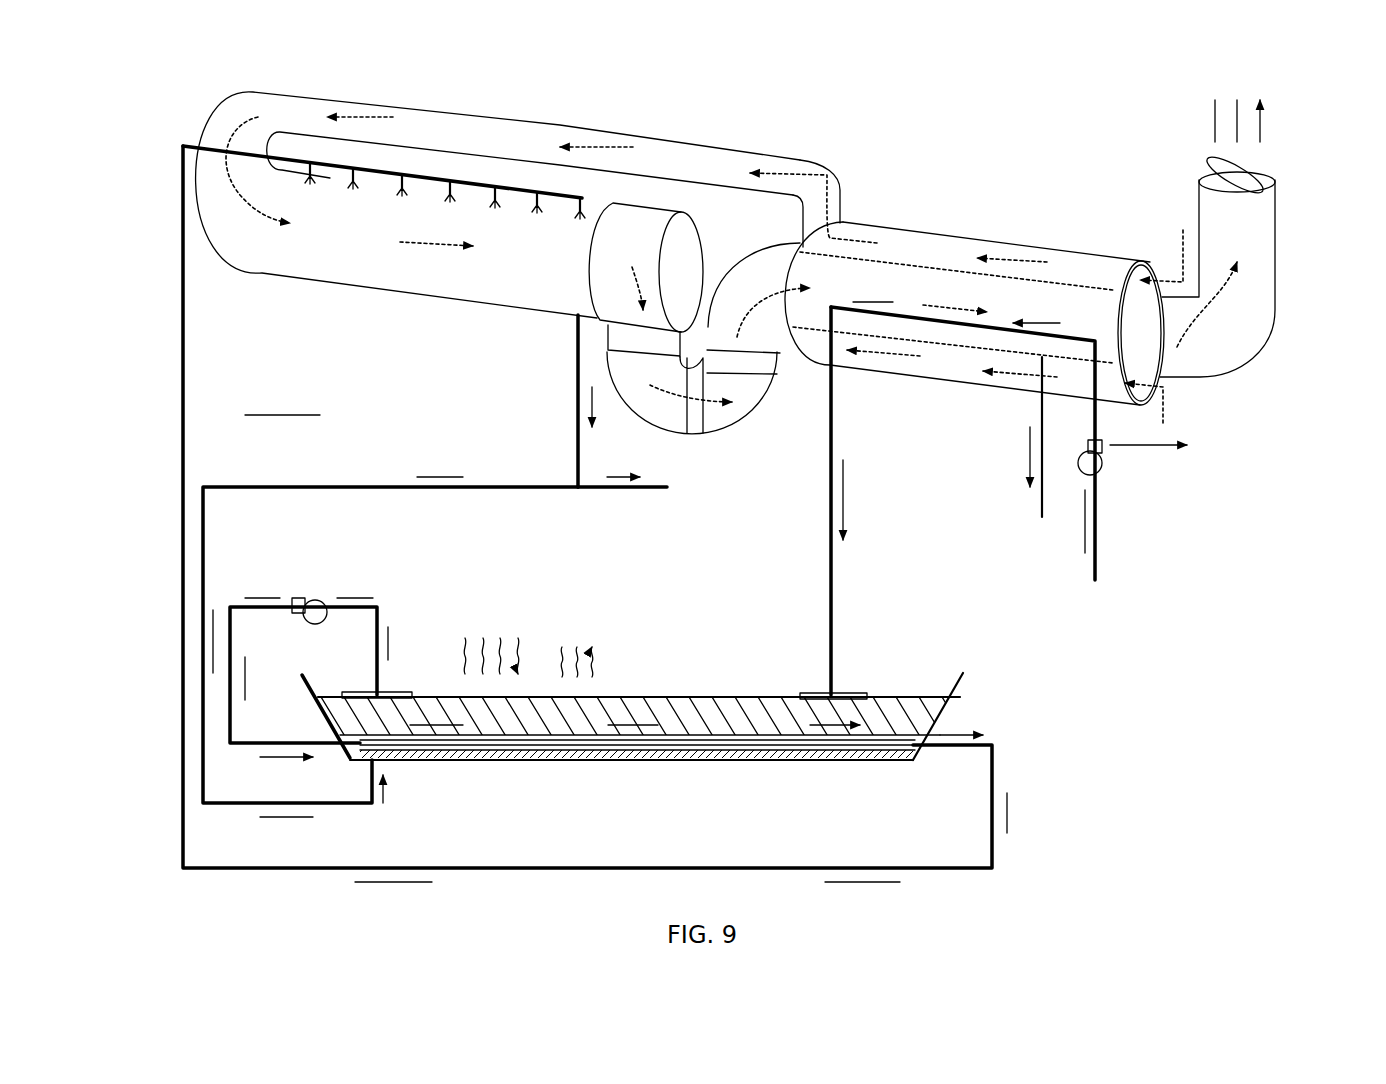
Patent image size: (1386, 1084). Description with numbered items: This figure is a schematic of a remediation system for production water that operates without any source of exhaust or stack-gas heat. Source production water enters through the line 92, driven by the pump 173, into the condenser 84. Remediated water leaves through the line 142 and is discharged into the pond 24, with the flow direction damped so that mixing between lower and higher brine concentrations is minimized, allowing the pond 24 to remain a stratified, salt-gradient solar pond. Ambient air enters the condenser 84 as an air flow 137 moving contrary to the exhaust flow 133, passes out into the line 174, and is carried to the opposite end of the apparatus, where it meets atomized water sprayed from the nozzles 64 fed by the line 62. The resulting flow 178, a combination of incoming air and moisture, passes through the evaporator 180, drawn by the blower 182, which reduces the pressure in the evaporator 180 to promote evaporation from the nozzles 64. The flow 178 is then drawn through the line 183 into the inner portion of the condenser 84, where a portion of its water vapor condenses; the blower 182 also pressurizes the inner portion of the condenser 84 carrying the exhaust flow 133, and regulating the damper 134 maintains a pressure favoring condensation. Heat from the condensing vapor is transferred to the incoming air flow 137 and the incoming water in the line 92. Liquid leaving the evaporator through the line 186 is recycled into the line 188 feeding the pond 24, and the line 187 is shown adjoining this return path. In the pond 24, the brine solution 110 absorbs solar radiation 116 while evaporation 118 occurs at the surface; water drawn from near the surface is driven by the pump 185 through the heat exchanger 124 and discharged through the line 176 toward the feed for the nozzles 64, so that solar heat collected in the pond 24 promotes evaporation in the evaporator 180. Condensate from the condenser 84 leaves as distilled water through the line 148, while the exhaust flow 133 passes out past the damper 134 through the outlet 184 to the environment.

The pond 24 is at (648, 713).
The line 62 is at (428, 175).
The nozzles 64 is at (470, 180).
The condenser 84 is at (1023, 198).
The line 92 is at (1097, 563).
The solution 110 is at (748, 696).
The solar radiation 116 is at (483, 645).
The evaporation 118 is at (595, 663).
The heat exchanger 124 is at (590, 753).
The exhaust flow 133 is at (953, 300).
The damper 134 is at (1242, 178).
The air flow 137 is at (351, 114).
The line 142 is at (832, 420).
The line 148 is at (1042, 498).
The pump 173 is at (1100, 468).
The line 174 is at (532, 138).
The line 176 is at (182, 358).
The flow 178 is at (437, 242).
The evaporator 180 is at (320, 287).
The blower 182 is at (653, 217).
The line 183 is at (710, 403).
The exhaust stack 184 is at (1265, 247).
The pump 185 is at (312, 603).
The line 186 is at (578, 404).
The return pipe 187 is at (645, 488).
The line 188 is at (333, 487).